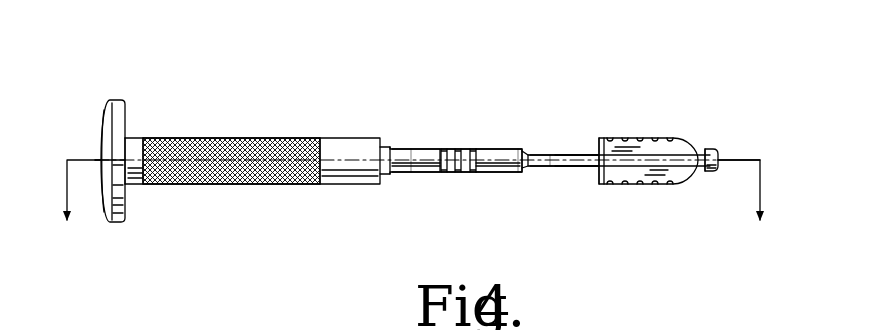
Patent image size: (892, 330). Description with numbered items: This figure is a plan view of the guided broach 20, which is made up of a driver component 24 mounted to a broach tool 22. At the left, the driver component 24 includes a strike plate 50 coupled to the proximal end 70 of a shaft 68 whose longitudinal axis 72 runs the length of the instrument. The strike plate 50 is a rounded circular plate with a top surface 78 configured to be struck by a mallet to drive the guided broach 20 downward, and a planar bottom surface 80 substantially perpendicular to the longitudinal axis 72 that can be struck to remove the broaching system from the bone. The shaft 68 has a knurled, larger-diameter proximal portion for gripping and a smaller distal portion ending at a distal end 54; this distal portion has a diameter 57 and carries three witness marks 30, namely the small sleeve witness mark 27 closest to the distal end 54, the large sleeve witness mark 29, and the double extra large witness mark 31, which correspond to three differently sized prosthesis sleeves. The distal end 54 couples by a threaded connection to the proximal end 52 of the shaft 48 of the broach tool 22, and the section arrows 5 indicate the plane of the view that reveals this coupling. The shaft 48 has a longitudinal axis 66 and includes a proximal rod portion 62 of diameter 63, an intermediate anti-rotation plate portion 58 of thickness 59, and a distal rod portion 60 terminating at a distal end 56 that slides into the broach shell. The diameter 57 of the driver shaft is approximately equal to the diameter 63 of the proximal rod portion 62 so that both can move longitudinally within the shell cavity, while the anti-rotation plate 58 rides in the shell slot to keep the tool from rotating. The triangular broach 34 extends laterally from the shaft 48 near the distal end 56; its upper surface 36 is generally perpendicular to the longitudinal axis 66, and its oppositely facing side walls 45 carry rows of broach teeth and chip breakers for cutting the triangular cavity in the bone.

The section line 5 is at (414, 206).
The guided broach 20 is at (308, 78).
The broach tool 22 is at (550, 153).
The driver component 24 is at (210, 184).
The small sleeve witness mark 27 is at (472, 149).
The large sleeve witness mark 29 is at (457, 149).
The witness marks 30 is at (472, 172).
The double extra large witness mark 31 is at (443, 149).
The triangular broach 34 is at (650, 138).
The upper surface 36 is at (600, 180).
The side walls 45 is at (620, 138).
The shaft 48 is at (565, 156).
The strike plate 50 is at (113, 100).
The proximal end 52 is at (470, 173).
The distal end 54 is at (493, 153).
The distal end 56 is at (712, 148).
The diameter 57 is at (411, 118).
The anti-rotation plate portion 58 is at (560, 166).
The thickness 59 is at (550, 168).
The distal rod portion 60 is at (707, 172).
The proximal rod portion 62 is at (518, 147).
The diameter 63 is at (518, 174).
The longitudinal axis 66 is at (757, 148).
The shaft 68 is at (250, 140).
The proximal end 70 is at (128, 135).
The longitudinal axis 72 is at (83, 155).
The top surface 78 is at (100, 183).
The bottom surface 80 is at (125, 206).